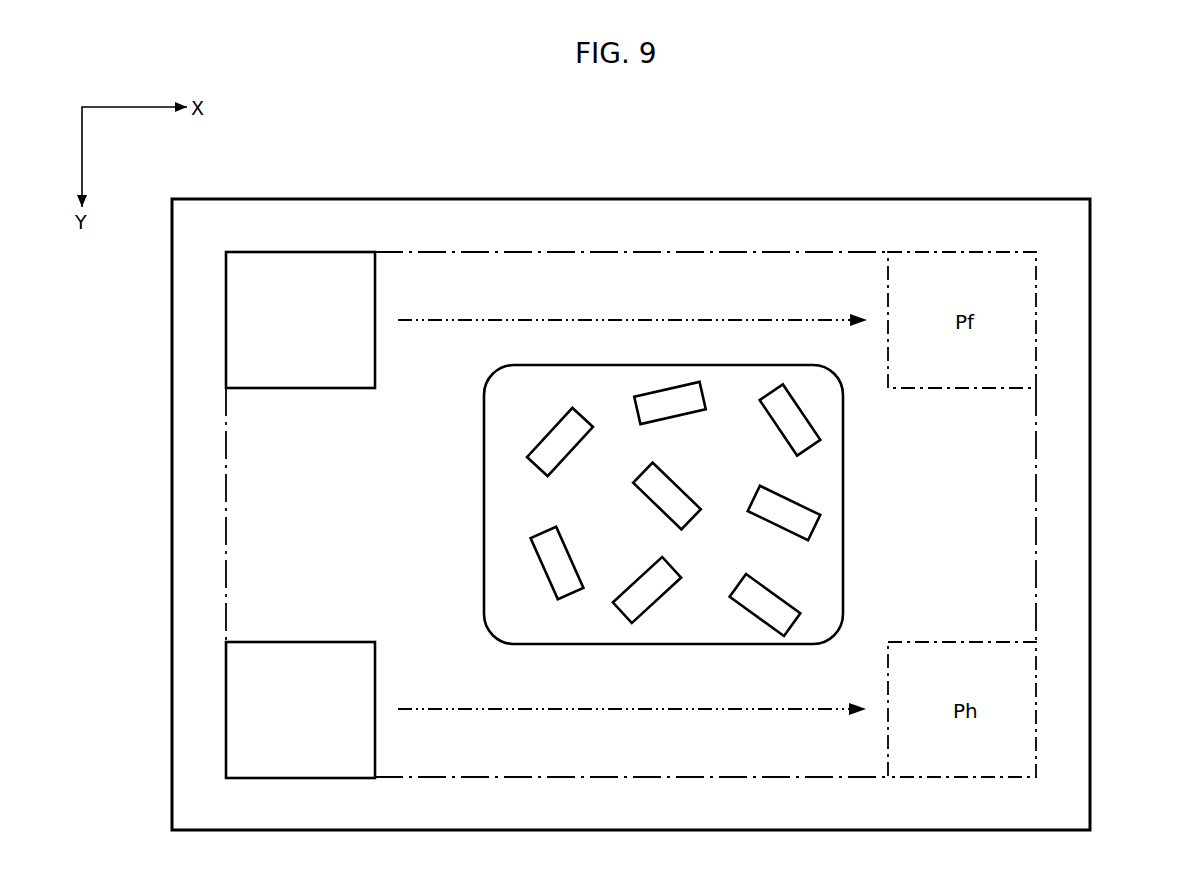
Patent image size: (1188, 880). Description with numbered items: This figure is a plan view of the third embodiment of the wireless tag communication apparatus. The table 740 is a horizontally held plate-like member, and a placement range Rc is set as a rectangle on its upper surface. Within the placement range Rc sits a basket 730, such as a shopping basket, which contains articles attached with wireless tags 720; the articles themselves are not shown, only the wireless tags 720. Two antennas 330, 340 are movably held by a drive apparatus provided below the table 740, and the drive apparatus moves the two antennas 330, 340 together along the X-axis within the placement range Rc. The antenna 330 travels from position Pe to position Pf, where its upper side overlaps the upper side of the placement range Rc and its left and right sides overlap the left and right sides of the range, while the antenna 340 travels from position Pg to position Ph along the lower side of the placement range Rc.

The antenna 330 is at (323, 373).
The antenna 340 is at (319, 657).
The wireless tag 720 is at (655, 393).
The basket 730 is at (843, 490).
The table 740 is at (1090, 232).
The placement range Rc is at (663, 250).